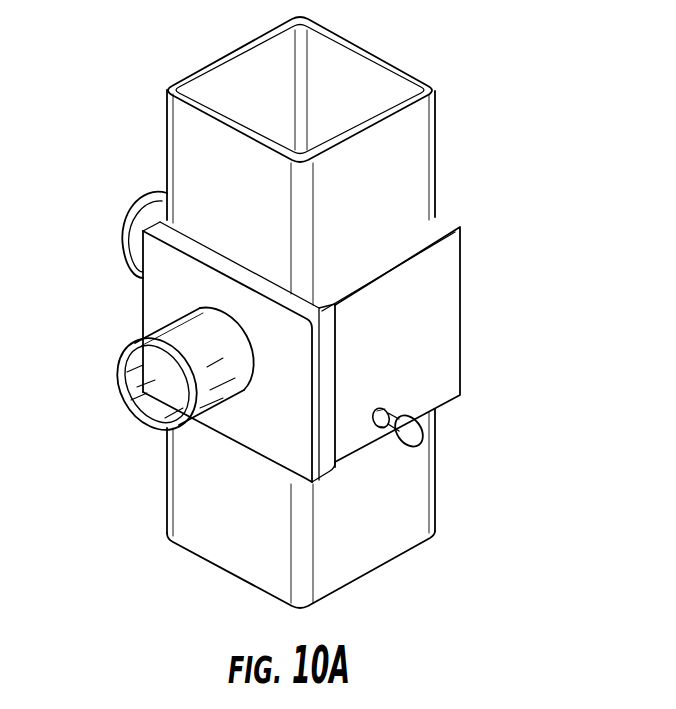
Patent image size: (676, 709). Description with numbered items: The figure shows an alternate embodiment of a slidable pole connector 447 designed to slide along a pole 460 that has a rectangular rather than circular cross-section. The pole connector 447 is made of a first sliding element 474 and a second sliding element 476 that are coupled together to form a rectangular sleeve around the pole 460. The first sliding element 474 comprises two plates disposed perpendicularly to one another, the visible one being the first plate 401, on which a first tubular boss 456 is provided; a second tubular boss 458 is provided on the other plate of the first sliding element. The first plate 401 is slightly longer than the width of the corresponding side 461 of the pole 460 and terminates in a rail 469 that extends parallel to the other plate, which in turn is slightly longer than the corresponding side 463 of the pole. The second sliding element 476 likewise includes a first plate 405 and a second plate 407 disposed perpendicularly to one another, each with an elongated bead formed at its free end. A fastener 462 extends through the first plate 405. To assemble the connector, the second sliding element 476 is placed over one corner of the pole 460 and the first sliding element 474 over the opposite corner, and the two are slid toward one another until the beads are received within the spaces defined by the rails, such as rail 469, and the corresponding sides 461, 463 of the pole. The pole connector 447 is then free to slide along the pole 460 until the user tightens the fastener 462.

The first plate 401 is at (243, 433).
The first plate 405 is at (450, 303).
The second plate 407 is at (450, 222).
The slidable pole connector 447 is at (309, 341).
The first tubular boss 456 is at (147, 402).
The second tubular boss 458 is at (125, 243).
The pole 460 is at (415, 160).
The side 461 is at (232, 145).
The fastener 462 is at (412, 410).
The side 463 is at (240, 65).
The rail 469 is at (327, 462).
The first sliding element 474 is at (158, 291).
The second sliding element 476 is at (445, 360).